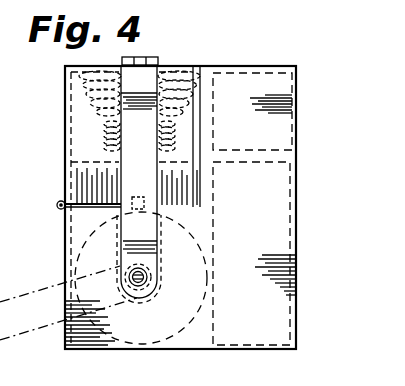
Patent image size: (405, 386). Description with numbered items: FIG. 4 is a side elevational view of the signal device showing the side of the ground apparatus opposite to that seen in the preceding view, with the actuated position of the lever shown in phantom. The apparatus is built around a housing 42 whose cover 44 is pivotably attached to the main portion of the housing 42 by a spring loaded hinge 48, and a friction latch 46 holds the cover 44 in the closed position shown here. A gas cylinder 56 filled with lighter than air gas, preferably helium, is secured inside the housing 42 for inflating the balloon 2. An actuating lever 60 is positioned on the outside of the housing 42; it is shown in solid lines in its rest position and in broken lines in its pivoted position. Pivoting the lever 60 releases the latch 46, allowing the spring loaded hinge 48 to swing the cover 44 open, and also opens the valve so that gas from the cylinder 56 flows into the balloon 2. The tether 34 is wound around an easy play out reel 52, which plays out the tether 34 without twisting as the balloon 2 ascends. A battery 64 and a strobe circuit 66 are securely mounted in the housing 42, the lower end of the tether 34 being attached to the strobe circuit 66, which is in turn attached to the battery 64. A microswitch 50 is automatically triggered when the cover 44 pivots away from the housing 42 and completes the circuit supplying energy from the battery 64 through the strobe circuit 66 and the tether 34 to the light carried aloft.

The balloon 2 is at (187, 62).
The tether 34 is at (118, 133).
The housing 42 is at (297, 320).
The cover 44 is at (196, 64).
The friction latch 46 is at (146, 201).
The spring loaded hinge 48 is at (59, 211).
The microswitch 50 is at (268, 378).
The easy play out reel 52 is at (78, 177).
The gas cylinder 56 is at (183, 323).
The actuating lever 60 is at (147, 150).
The battery 64 is at (297, 206).
The strobe circuit 66 is at (294, 115).